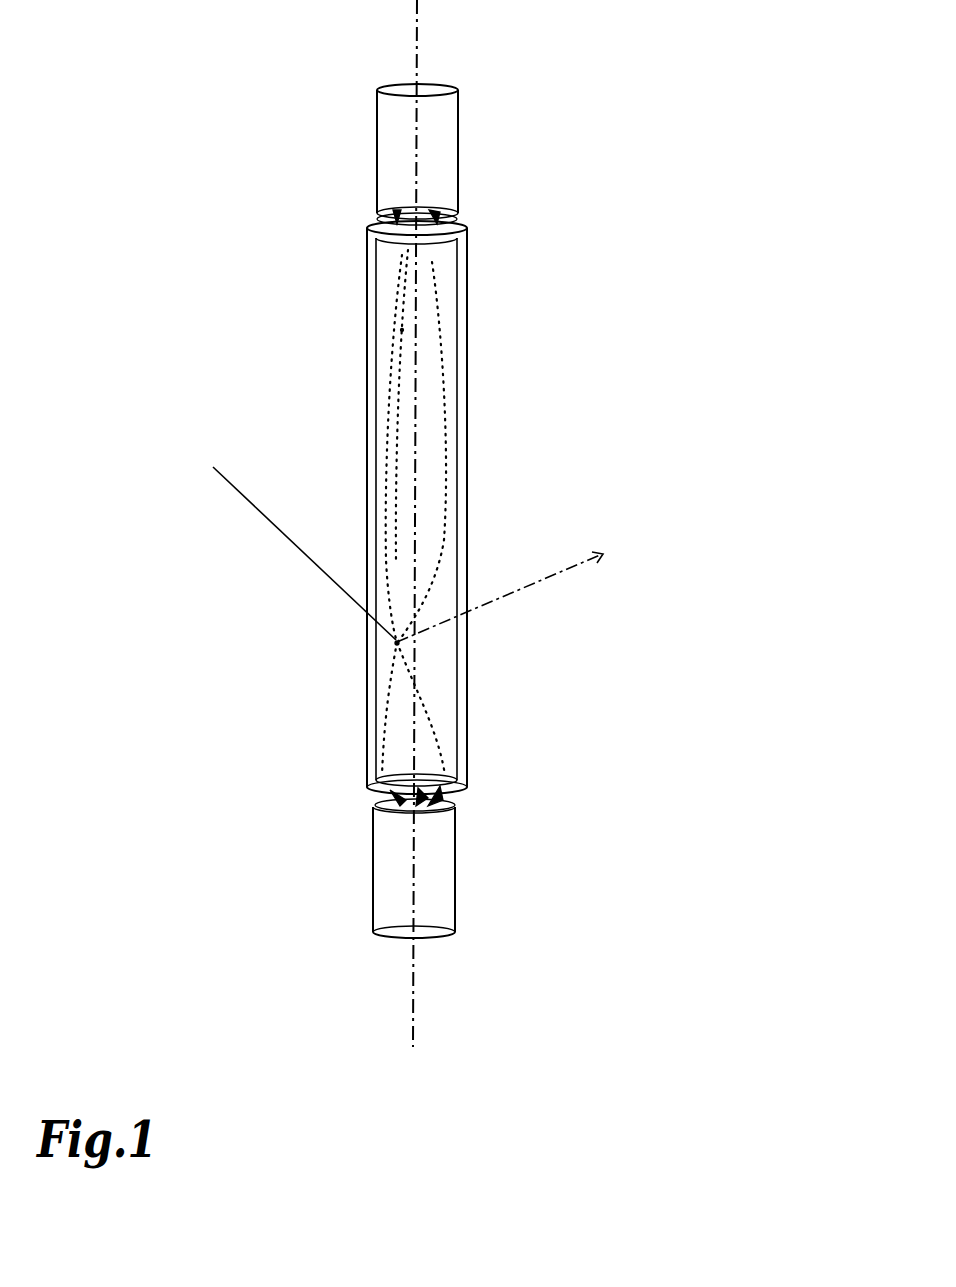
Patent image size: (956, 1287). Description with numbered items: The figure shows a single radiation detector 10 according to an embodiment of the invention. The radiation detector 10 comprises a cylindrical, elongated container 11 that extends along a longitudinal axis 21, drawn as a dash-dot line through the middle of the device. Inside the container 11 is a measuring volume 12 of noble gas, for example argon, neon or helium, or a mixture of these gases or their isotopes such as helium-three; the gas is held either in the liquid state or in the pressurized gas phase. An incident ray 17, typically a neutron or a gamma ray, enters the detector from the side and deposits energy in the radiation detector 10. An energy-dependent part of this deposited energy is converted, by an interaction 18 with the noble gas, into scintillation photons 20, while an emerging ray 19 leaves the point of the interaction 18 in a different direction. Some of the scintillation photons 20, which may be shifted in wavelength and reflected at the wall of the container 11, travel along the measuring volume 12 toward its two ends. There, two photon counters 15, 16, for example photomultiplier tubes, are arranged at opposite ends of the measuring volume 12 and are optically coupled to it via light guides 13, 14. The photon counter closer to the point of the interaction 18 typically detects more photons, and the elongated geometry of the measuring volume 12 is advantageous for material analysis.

The radiation detector 10 is at (543, 358).
The container 11 is at (466, 490).
The measuring volume 12 is at (437, 690).
The light guide 13 is at (440, 217).
The light guide 14 is at (440, 803).
The photon counter 15 is at (433, 125).
The photon counter 16 is at (430, 892).
The incident ray 17 is at (293, 547).
The interaction 18 is at (397, 643).
The emerging ray 19 is at (523, 588).
The scintillation photon 20 is at (402, 330).
The axis 21 is at (412, 993).